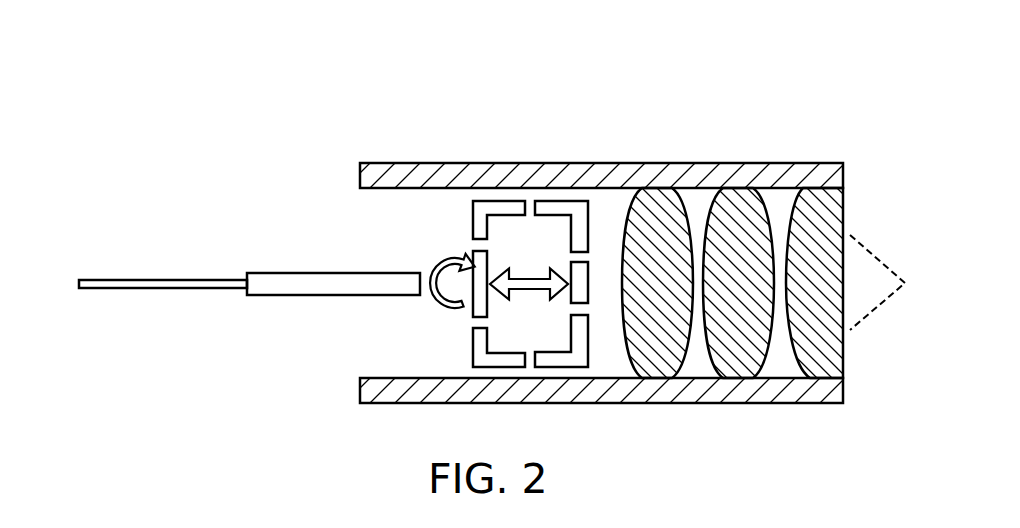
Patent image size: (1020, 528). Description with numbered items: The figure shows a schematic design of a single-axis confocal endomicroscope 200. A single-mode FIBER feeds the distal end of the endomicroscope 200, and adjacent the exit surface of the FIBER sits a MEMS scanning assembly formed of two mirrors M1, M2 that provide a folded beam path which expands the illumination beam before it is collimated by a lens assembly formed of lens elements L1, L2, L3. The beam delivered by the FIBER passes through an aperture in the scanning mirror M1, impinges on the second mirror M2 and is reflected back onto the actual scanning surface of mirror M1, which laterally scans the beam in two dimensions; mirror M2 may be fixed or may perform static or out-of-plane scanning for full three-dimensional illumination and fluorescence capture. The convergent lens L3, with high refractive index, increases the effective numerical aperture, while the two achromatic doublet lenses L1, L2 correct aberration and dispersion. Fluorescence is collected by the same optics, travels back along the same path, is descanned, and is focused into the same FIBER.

The single-axis confocal endomicroscope 200 is at (196, 86).
The single-mode fiber FIBER is at (163, 279).
The scanning mirror M1 is at (499, 203).
The second mirror M2 is at (557, 203).
The achromatic doublet lens L1 is at (660, 202).
The achromatic doublet lens L2 is at (738, 202).
The convergent lens L3 is at (826, 200).